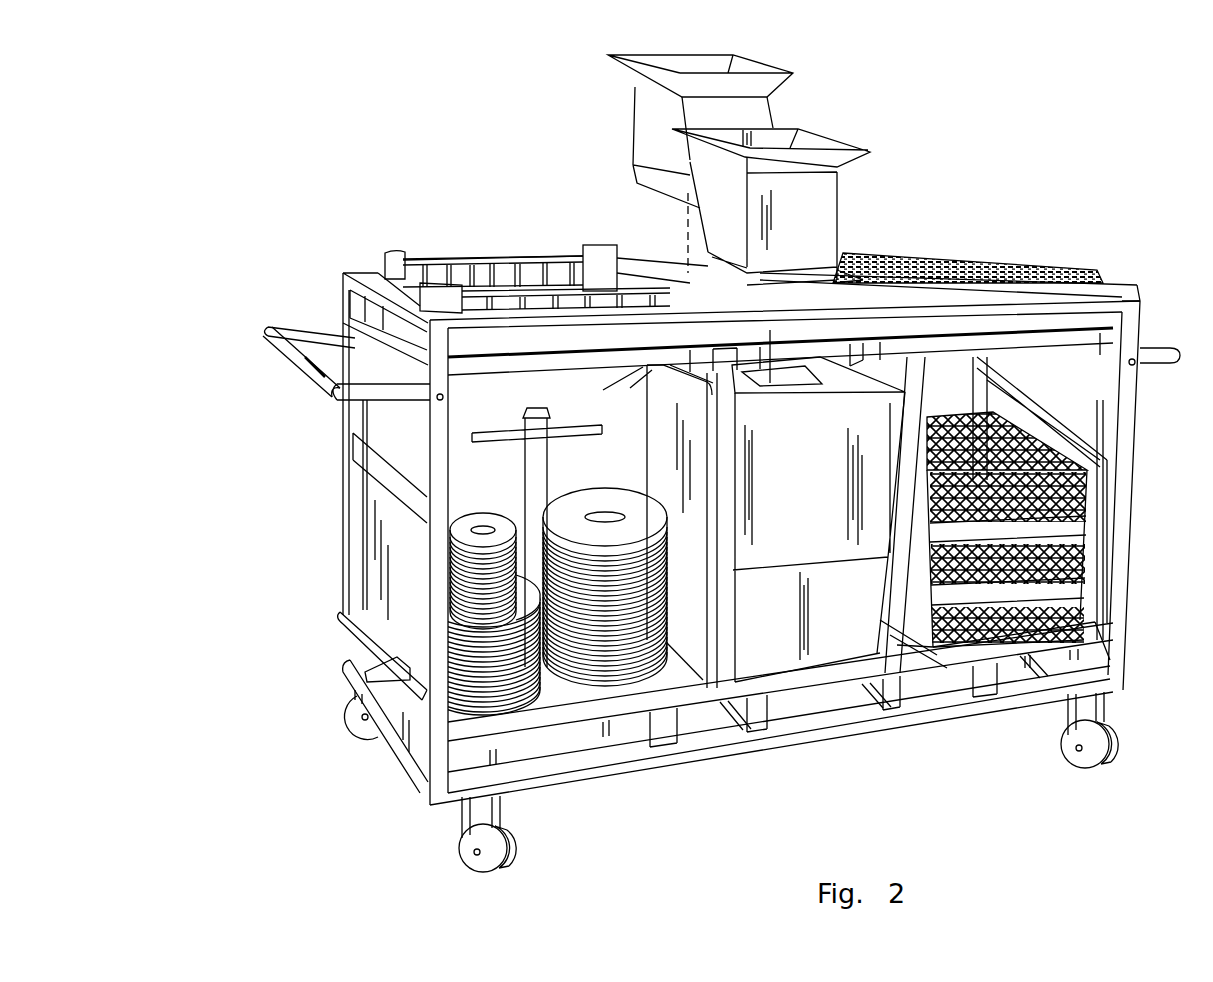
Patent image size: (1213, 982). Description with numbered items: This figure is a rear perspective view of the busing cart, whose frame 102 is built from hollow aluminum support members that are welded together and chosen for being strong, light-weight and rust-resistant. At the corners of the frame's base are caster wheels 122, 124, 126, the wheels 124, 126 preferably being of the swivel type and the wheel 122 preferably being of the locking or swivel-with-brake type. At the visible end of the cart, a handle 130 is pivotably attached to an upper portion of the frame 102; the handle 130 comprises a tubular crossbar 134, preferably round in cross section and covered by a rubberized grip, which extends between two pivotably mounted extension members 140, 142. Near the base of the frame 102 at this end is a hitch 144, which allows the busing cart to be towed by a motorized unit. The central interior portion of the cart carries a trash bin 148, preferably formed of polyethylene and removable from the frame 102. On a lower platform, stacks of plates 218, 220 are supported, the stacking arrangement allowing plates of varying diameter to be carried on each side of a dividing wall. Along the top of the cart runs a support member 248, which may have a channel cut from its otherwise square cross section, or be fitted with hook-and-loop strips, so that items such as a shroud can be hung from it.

The frame 102 is at (1141, 450).
The caster wheel 122 is at (1100, 772).
The caster wheel 124 is at (352, 712).
The caster wheel 126 is at (455, 846).
The handle 130 is at (263, 330).
The tubular crossbar 134 is at (284, 360).
The extension member 140 is at (303, 332).
The extension member 142 is at (383, 400).
The hitch 144 is at (345, 657).
The trash bin 148 is at (775, 497).
The stack of plates 218 is at (497, 522).
The stack of plates 220 is at (592, 503).
The support member 248 is at (361, 272).